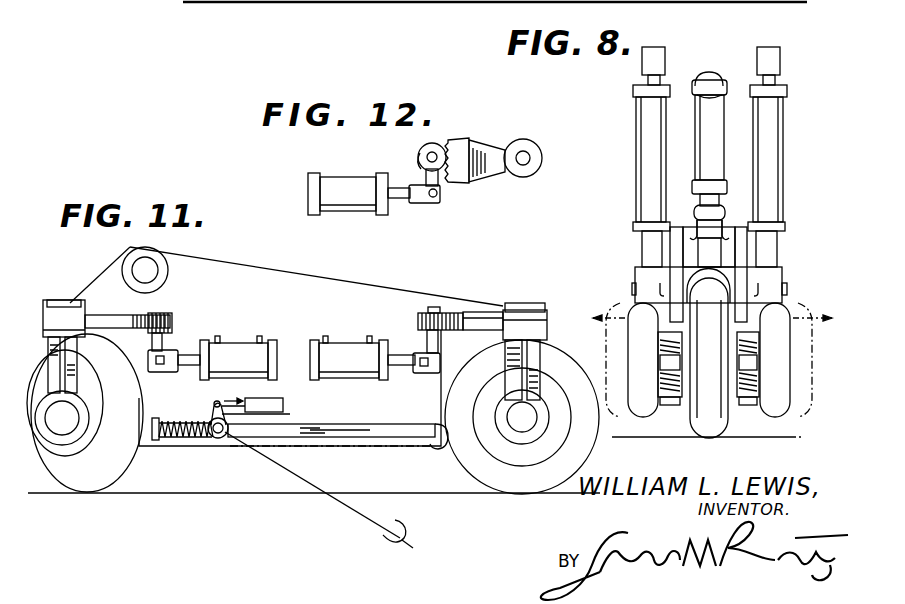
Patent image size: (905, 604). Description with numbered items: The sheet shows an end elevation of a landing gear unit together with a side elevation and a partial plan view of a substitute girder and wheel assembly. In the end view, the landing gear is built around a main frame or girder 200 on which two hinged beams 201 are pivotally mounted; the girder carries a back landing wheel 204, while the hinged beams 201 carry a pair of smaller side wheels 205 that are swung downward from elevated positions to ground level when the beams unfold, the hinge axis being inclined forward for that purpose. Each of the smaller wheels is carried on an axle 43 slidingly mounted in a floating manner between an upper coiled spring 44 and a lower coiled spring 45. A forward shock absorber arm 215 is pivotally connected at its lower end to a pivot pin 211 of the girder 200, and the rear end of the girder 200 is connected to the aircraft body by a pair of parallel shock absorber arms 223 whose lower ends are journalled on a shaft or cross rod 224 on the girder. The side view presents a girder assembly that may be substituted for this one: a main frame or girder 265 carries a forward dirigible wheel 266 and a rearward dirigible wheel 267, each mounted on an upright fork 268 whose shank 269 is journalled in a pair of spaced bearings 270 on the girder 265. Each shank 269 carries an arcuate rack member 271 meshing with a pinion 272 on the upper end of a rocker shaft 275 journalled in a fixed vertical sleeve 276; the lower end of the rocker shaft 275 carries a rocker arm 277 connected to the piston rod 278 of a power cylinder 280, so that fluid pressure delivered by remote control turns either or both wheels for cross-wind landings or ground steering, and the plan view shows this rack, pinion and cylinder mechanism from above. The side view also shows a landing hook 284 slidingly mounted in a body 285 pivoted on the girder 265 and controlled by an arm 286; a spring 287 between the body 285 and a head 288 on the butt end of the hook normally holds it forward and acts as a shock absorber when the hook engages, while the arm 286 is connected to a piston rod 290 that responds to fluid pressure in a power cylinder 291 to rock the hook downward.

In FIG. 8, the axle 43 is at (684, 353).
In FIG. 8, the upper coiled spring 44 is at (758, 346).
In FIG. 8, the lower coiled spring 45 is at (758, 380).
In FIG. 8, the main frame or girder 200 is at (751, 259).
In FIG. 8, the hinged beams 201 is at (681, 403).
In FIG. 8, the back landing wheel 204 is at (709, 437).
In FIG. 8, the side wheels 205 is at (632, 304).
In FIG. 8, the pivot pin 211 is at (726, 226).
In FIG. 8, the forward shock absorber arm 215 is at (736, 86).
In FIG. 8, the shock absorber arms 223 is at (634, 183).
In FIG. 8, the shaft or cross rod 224 is at (788, 290).
In FIG. 11, the main frame or girder 265 is at (319, 268).
In FIG. 11, the forward dirigible wheel 266 is at (97, 484).
In FIG. 11, the rearward dirigible wheel 267 is at (477, 478).
In FIG. 11, the upright fork 268 is at (538, 352).
In FIG. 12, the shank 269 is at (529, 160).
In FIG. 11, the shank 269 is at (528, 303).
In FIG. 12, the bearings 270 is at (521, 141).
In FIG. 11, the bearings 270 is at (510, 303).
In FIG. 12, the arcuate rack member 271 is at (462, 146).
In FIG. 11, the arcuate rack member 271 is at (470, 311).
In FIG. 12, the pinion 272 is at (417, 161).
In FIG. 11, the pinion 272 is at (418, 318).
In FIG. 12, the rocker shaft 275 is at (438, 149).
In FIG. 11, the rocker shaft 275 is at (433, 307).
In FIG. 11, the fixed vertical sleeve 276 is at (172, 338).
In FIG. 12, the rocker arm 277 is at (425, 203).
In FIG. 11, the rocker arm 277 is at (430, 375).
In FIG. 12, the piston rod 278 is at (397, 199).
In FIG. 11, the piston rod 278 is at (396, 368).
In FIG. 12, the power cylinder 280 is at (338, 176).
In FIG. 11, the power cylinder 280 is at (250, 343).
In FIG. 11, the landing hook 284 is at (316, 437).
In FIG. 11, the body 285 is at (218, 439).
In FIG. 11, the arm 286 is at (217, 404).
In FIG. 11, the spring 287 is at (185, 438).
In FIG. 11, the head 288 is at (160, 420).
In FIG. 11, the piston rod 290 is at (270, 418).
In FIG. 11, the power cylinder 291 is at (268, 400).